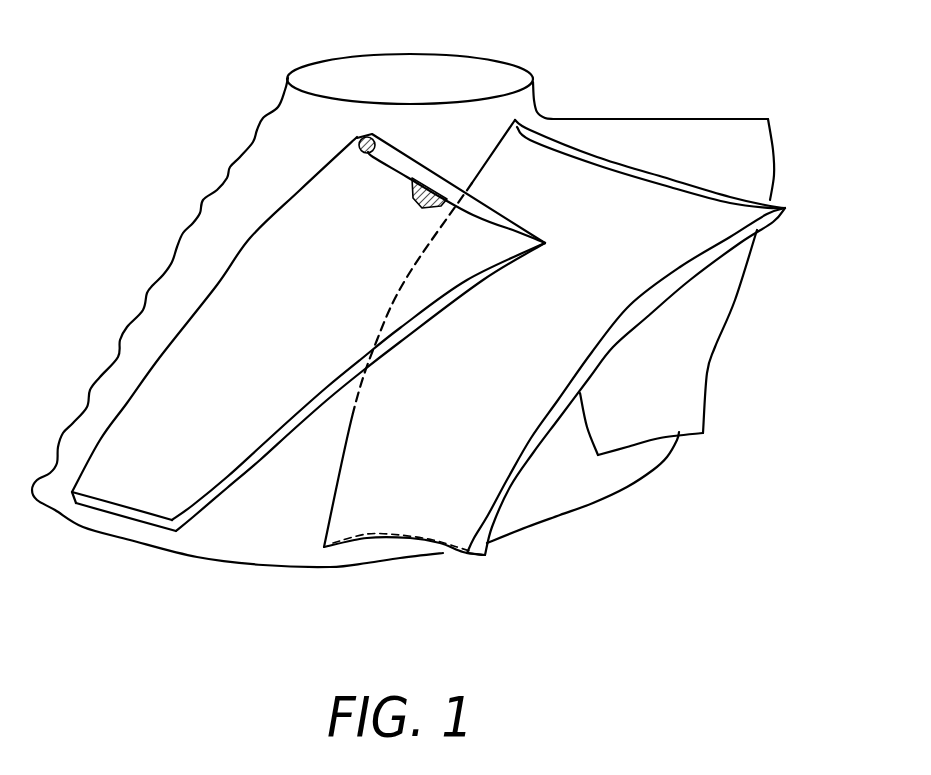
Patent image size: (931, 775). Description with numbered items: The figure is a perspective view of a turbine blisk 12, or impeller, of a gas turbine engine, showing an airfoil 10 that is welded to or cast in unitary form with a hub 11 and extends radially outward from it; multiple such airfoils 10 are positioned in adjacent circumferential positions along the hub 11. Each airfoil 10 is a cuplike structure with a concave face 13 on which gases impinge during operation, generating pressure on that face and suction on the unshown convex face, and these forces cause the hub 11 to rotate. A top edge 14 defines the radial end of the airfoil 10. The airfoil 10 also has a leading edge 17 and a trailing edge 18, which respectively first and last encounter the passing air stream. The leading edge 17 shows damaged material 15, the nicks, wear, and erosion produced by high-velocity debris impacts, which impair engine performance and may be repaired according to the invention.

The airfoil 10 is at (428, 358).
The hub 11 is at (297, 496).
The turbine blisk 12 is at (607, 81).
The concave face 13 is at (554, 364).
The top edge 14 is at (538, 443).
The damaged material 15 is at (366, 137).
The leading edge 17 is at (505, 227).
The trailing edge 18 is at (457, 555).